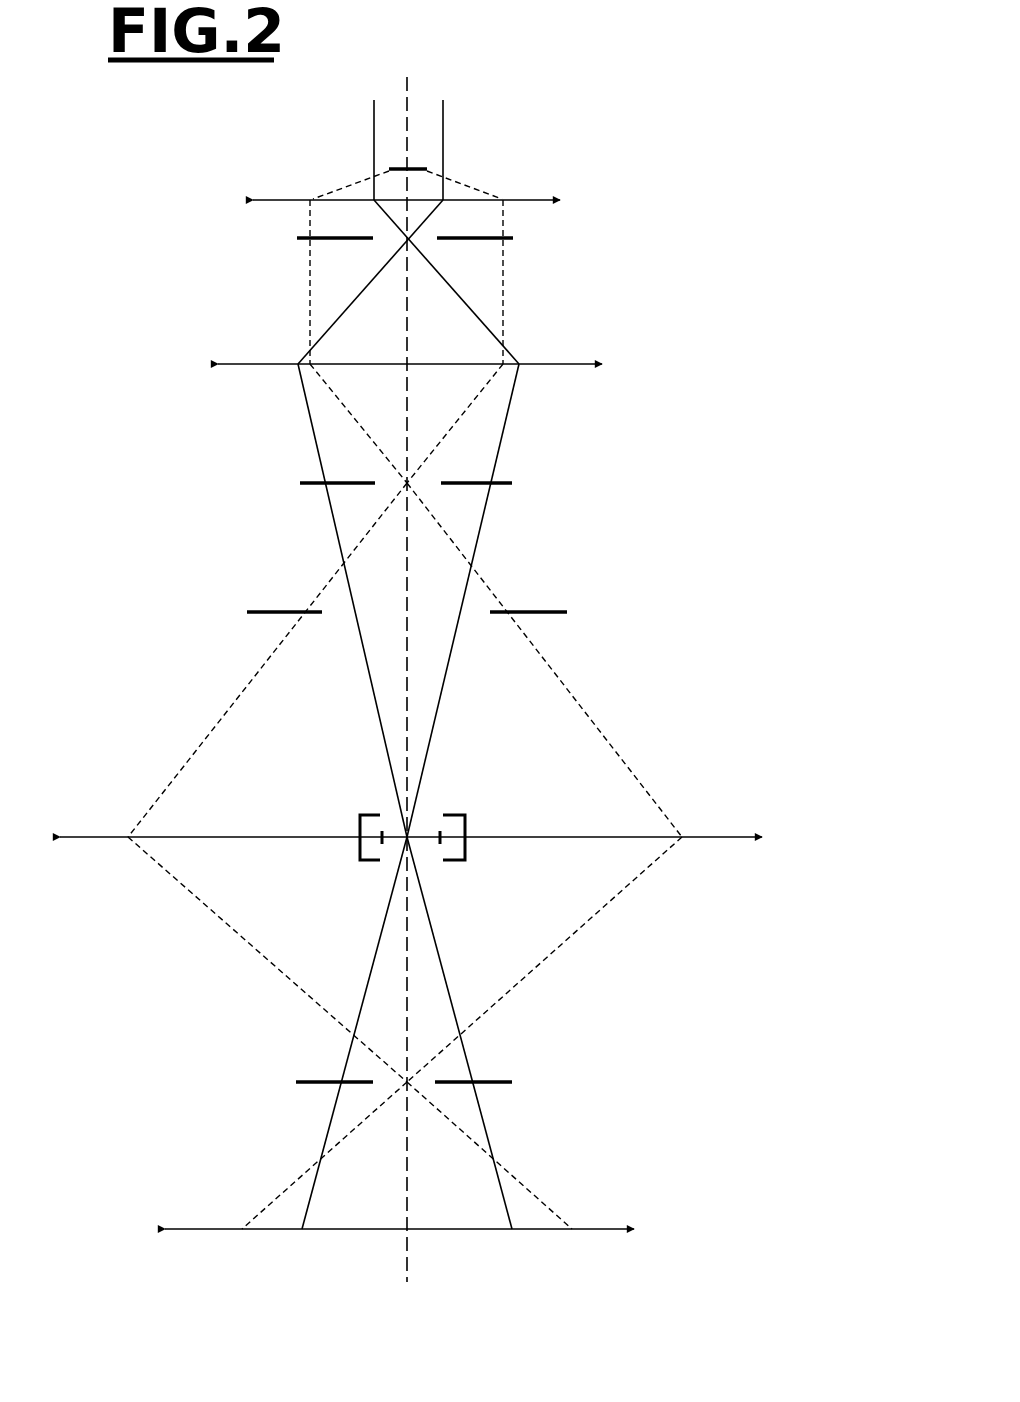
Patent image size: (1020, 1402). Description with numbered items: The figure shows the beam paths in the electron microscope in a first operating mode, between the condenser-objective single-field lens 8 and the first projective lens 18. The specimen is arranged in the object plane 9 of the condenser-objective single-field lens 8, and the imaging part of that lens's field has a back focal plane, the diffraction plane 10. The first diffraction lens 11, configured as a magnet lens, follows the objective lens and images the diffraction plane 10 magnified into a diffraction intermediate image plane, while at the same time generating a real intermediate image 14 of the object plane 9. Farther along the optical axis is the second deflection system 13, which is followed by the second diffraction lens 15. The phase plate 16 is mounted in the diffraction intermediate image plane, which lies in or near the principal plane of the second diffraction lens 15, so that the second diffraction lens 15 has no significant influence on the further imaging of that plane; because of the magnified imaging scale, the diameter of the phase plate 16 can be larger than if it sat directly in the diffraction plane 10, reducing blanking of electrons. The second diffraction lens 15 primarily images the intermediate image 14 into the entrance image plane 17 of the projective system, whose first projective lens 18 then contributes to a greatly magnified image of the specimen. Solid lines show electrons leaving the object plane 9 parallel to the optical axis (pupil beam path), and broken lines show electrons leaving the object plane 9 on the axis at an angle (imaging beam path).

The condenser-objective single-field lens 8 is at (525, 198).
The object plane 9 is at (419, 168).
The diffraction plane 10 is at (511, 238).
The first diffraction lens 11 is at (568, 363).
The second deflection system 13 is at (552, 612).
The intermediate image 14 is at (515, 482).
The second diffraction lens 15 is at (720, 834).
The phase plate 16 is at (466, 820).
The entrance image plane 17 is at (512, 1082).
The first projective lens 18 is at (596, 1229).